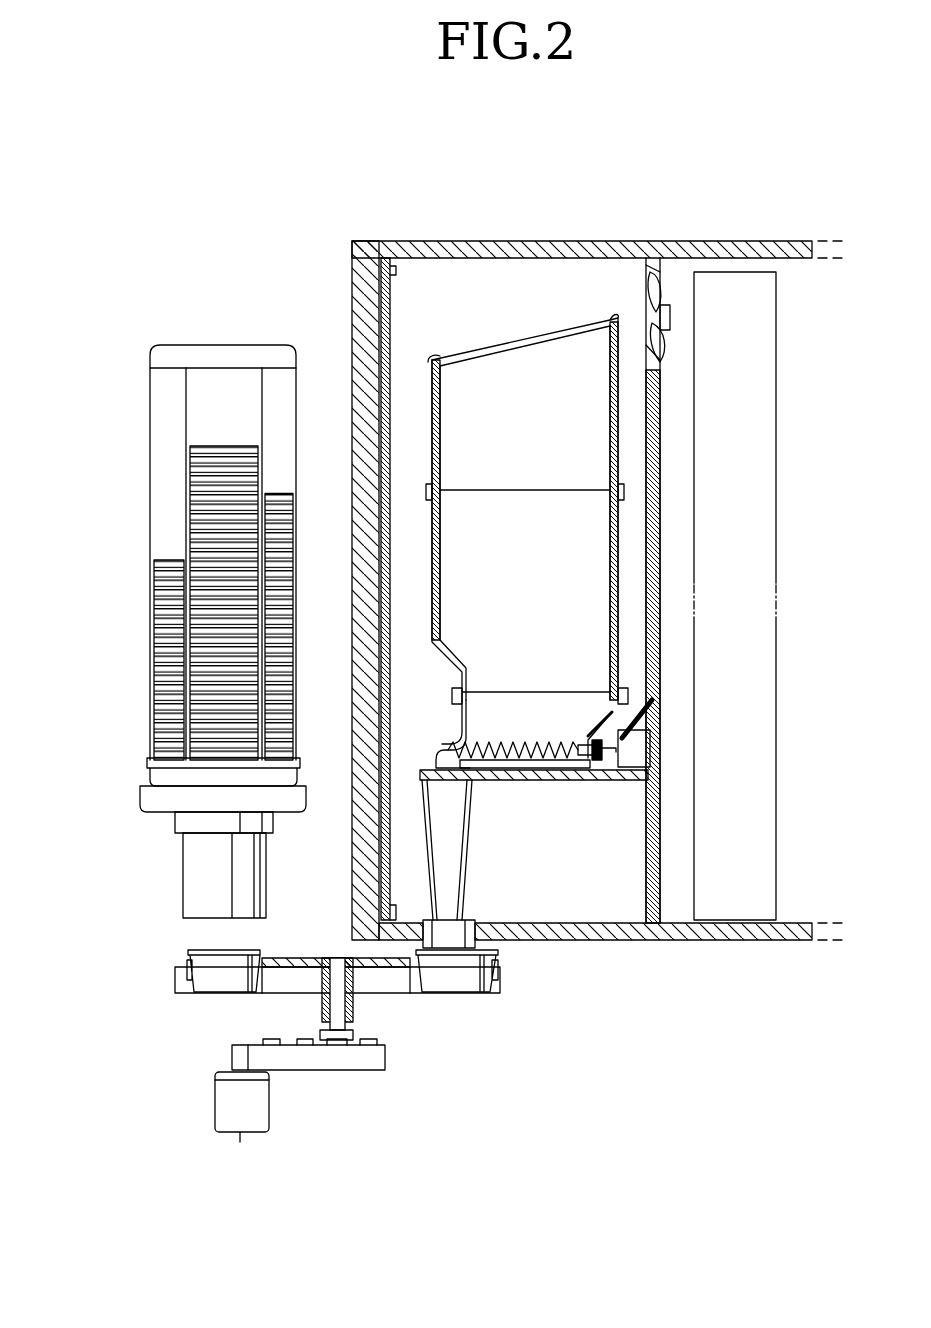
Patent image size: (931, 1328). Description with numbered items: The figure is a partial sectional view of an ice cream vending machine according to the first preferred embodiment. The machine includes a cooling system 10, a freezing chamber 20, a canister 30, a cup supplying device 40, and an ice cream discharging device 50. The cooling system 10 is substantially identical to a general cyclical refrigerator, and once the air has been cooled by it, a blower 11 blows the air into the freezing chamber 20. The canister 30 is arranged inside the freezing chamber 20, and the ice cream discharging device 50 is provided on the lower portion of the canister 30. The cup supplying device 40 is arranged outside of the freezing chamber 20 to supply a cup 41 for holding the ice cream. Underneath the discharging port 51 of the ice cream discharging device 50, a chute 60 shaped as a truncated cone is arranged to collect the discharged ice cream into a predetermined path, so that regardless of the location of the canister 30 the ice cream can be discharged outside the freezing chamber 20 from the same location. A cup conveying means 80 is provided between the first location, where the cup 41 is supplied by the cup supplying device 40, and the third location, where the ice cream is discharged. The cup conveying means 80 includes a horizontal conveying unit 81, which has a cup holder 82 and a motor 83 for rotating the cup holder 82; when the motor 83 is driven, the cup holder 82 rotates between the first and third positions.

The cooling system 10 is at (785, 528).
The blower 11 is at (665, 300).
The freezing chamber 20 is at (545, 241).
The canister 30 is at (660, 612).
The cup supplying device 40 is at (135, 668).
The cup 41 is at (205, 985).
The ice cream discharging device 50 is at (548, 770).
The discharging port 51 is at (455, 760).
The chute 60 is at (468, 840).
The cup conveying means 80 is at (285, 1066).
The horizontal conveying unit 81 is at (227, 1067).
The cup holder 82 is at (300, 992).
The motor 83 is at (230, 1095).